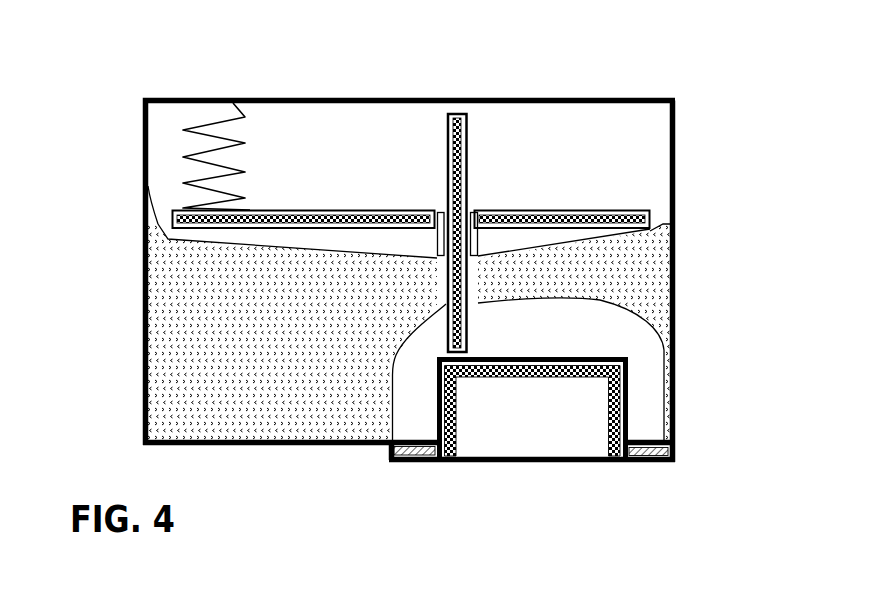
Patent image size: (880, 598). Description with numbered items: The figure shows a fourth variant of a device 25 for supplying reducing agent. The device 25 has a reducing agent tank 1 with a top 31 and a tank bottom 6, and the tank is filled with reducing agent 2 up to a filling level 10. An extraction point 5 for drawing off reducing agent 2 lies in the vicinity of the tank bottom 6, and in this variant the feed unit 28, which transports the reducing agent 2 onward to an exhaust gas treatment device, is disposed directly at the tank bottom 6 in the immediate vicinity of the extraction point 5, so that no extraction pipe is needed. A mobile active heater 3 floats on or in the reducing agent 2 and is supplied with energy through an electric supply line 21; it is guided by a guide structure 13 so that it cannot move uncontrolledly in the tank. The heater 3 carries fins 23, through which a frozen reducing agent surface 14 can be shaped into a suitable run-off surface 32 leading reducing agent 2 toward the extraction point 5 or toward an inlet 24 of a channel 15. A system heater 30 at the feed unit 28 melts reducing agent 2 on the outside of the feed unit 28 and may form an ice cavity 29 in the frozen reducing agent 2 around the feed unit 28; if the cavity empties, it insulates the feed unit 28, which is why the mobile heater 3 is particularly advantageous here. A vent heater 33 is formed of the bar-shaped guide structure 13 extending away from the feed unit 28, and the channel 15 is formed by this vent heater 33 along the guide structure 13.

The reducing agent tank 1 is at (380, 100).
The reducing agent 2 is at (294, 253).
The heater 3 is at (532, 216).
The extraction point 5 is at (433, 450).
The tank bottom 6 is at (222, 445).
The filling level 10 is at (141, 222).
The guide structure 13 is at (463, 113).
The frozen reducing agent surface 14 is at (148, 184).
The channel 15 is at (448, 302).
The electric supply line 21 is at (243, 117).
The fins 23 is at (423, 241).
The inlet 24 is at (472, 263).
The device 25 is at (690, 111).
The feed unit 28 is at (540, 462).
The ice cavity 29 is at (560, 320).
The system heater 30 is at (606, 436).
The top 31 is at (610, 97).
The run-off surface 32 is at (253, 245).
The vent heater 33 is at (468, 150).